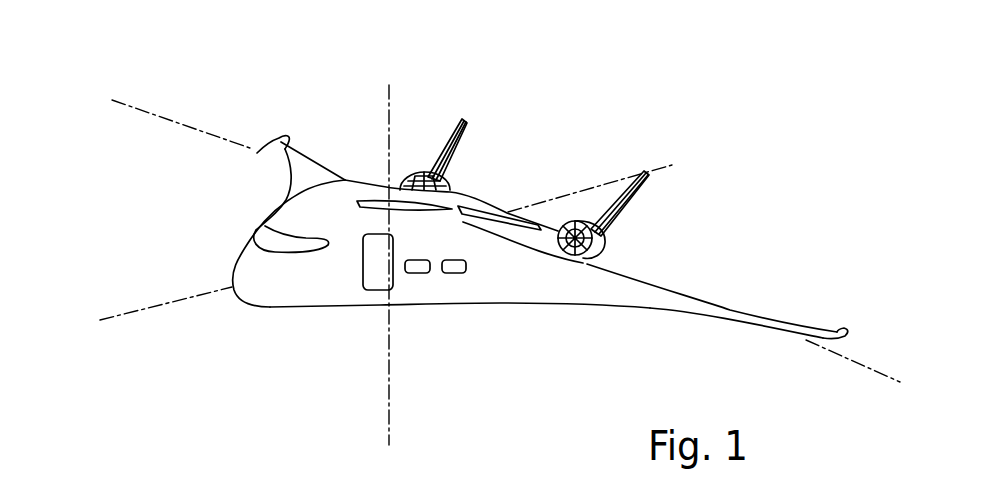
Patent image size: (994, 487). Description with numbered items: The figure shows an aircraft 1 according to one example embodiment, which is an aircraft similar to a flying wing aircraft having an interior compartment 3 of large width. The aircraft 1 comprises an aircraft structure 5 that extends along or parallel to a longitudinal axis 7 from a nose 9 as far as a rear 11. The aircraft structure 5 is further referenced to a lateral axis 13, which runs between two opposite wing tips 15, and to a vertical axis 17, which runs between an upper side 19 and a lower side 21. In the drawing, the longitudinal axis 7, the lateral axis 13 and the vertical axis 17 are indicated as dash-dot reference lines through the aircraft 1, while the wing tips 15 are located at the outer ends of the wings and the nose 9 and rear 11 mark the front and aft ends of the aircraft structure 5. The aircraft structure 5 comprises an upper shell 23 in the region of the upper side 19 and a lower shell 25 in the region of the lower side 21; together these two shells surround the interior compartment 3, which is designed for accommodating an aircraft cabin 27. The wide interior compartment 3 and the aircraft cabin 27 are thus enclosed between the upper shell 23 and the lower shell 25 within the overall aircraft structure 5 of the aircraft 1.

The aircraft 1 is at (116, 162).
The interior compartment 3 is at (405, 258).
The aircraft structure 5 is at (488, 283).
The longitudinal axis 7 is at (124, 318).
The nose 9 is at (253, 288).
The rear 11 is at (492, 207).
The lateral axis 13 is at (159, 117).
The wing tips 15 is at (278, 137).
The vertical axis 17 is at (390, 110).
The upper side 19 is at (237, 211).
The lower side 21 is at (460, 350).
The upper shell 23 is at (318, 218).
The lower shell 25 is at (353, 318).
The aircraft cabin 27 is at (322, 283).